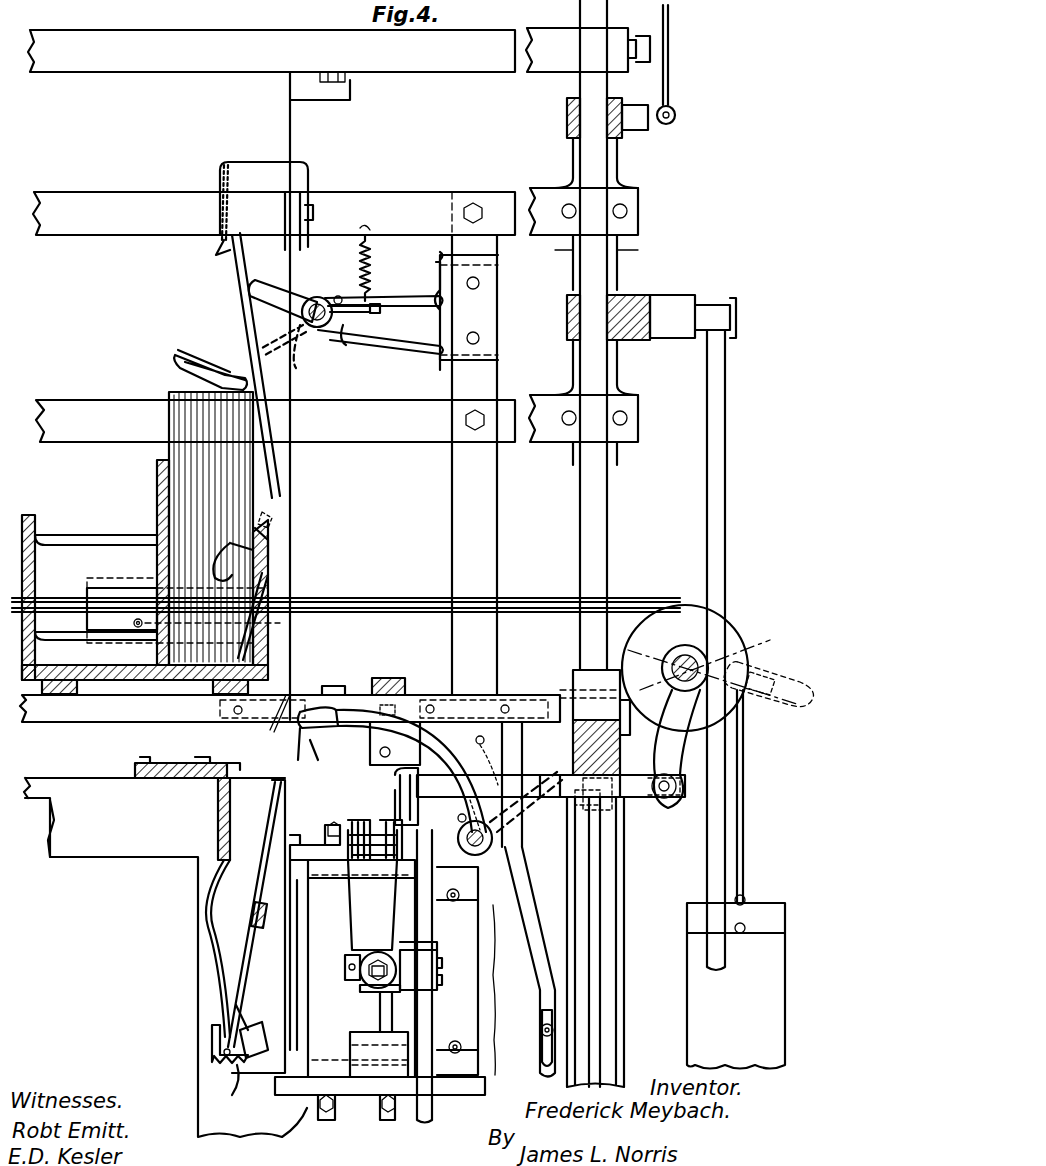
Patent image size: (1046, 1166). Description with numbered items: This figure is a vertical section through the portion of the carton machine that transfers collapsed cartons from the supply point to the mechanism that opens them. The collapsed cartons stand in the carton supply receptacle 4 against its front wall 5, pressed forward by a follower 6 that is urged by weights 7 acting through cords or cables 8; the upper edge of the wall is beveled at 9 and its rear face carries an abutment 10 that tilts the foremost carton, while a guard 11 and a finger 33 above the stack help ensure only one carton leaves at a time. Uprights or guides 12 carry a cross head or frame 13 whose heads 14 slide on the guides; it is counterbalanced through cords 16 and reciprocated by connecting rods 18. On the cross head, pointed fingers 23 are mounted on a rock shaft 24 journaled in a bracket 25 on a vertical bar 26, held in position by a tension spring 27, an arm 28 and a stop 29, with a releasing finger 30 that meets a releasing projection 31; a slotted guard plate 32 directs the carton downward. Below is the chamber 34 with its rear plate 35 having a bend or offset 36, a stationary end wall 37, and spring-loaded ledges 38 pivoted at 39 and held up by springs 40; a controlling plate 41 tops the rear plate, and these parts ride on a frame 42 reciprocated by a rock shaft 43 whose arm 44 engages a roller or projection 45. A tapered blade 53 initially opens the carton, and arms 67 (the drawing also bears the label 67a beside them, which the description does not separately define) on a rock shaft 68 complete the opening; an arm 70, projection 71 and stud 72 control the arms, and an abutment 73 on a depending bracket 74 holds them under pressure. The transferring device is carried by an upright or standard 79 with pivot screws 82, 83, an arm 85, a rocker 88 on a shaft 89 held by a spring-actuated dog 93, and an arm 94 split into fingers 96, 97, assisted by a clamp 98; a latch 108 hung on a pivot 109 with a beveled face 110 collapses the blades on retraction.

The carton supply receptacle 4 is at (112, 538).
The front wall 5 is at (262, 562).
The follower 6 is at (160, 487).
The weights 7 is at (736, 986).
The cords or cables 8 is at (390, 596).
The bevel 9 is at (270, 530).
The abutment 10 is at (270, 643).
The guard 11 is at (245, 290).
The uprights or guides 12 is at (600, 515).
The cross head or frame 13 is at (372, 202).
The heads 14 is at (612, 278).
The cords 16 is at (676, 60).
The connecting rods 18 is at (710, 498).
The fingers 23 is at (290, 295).
The rock shaft 24 is at (320, 306).
The bracket 25 is at (384, 287).
The vertical bar 26 is at (466, 465).
The tension spring 27 is at (375, 262).
The arm 28 is at (345, 340).
The stop 29 is at (362, 304).
The releasing finger 30 is at (293, 346).
The releasing projection 31 is at (275, 520).
The guard plate 32 is at (280, 598).
The finger 33 is at (228, 372).
The chamber 34 is at (256, 913).
The rear plate 35 is at (218, 829).
The bend or offset 36 is at (212, 924).
The end wall 37 is at (259, 1008).
The ledges 38 is at (252, 1036).
The pivot 39 is at (222, 1052).
The springs 40 is at (228, 1086).
The controlling plate 41 is at (178, 763).
The frame 42 is at (558, 775).
The rock shaft 43 is at (698, 655).
The arm 44 is at (676, 749).
The roller or projection 45 is at (662, 798).
The blade 53 is at (258, 930).
The arms 67 is at (440, 762).
The knob 67a is at (321, 744).
The rock shaft 68 is at (493, 845).
The arm 70 is at (540, 800).
The projection 71 is at (465, 792).
The stud or projection 72 is at (458, 822).
The abutment 73 is at (541, 1028).
The depending arm or bracket 74 is at (528, 915).
The upright or standard 79 is at (416, 1138).
The pivot screw 82 is at (345, 888).
The pivot screw 83 is at (350, 1042).
The arm 85 is at (382, 1018).
The rocker 88 is at (362, 986).
The shaft 89 is at (347, 962).
The spring-actuated dog 93 is at (420, 947).
The arm 94 is at (372, 890).
The finger 96 is at (388, 840).
The finger 97 is at (350, 840).
The clamp 98 is at (462, 893).
The latch 108 is at (400, 772).
The pivot 109 is at (405, 690).
The bevel 110 is at (396, 792).